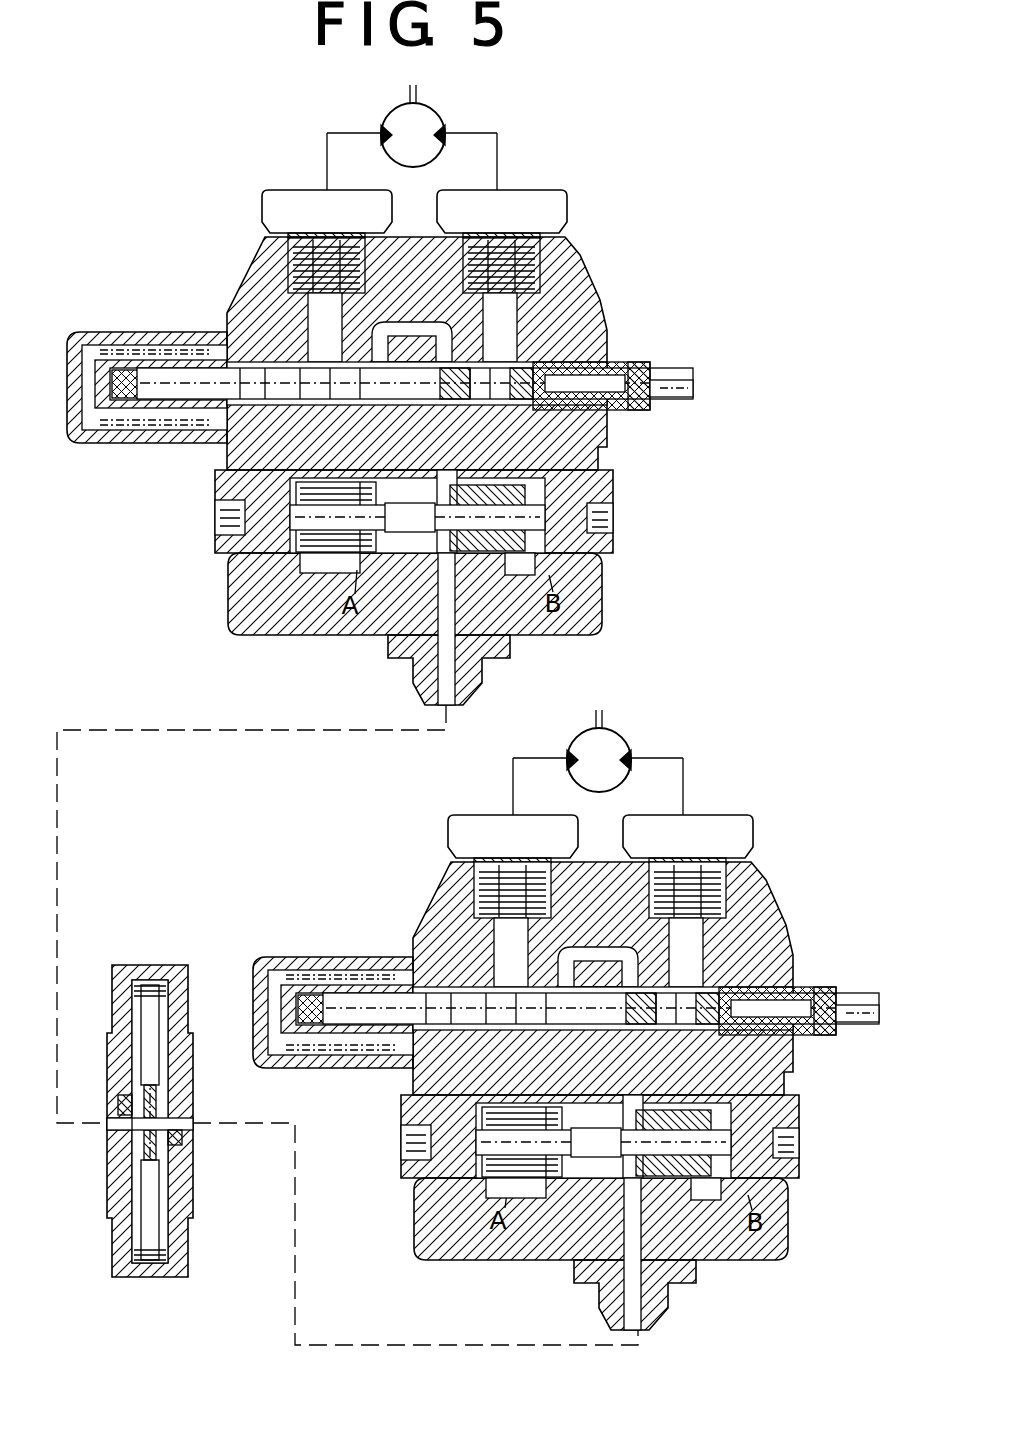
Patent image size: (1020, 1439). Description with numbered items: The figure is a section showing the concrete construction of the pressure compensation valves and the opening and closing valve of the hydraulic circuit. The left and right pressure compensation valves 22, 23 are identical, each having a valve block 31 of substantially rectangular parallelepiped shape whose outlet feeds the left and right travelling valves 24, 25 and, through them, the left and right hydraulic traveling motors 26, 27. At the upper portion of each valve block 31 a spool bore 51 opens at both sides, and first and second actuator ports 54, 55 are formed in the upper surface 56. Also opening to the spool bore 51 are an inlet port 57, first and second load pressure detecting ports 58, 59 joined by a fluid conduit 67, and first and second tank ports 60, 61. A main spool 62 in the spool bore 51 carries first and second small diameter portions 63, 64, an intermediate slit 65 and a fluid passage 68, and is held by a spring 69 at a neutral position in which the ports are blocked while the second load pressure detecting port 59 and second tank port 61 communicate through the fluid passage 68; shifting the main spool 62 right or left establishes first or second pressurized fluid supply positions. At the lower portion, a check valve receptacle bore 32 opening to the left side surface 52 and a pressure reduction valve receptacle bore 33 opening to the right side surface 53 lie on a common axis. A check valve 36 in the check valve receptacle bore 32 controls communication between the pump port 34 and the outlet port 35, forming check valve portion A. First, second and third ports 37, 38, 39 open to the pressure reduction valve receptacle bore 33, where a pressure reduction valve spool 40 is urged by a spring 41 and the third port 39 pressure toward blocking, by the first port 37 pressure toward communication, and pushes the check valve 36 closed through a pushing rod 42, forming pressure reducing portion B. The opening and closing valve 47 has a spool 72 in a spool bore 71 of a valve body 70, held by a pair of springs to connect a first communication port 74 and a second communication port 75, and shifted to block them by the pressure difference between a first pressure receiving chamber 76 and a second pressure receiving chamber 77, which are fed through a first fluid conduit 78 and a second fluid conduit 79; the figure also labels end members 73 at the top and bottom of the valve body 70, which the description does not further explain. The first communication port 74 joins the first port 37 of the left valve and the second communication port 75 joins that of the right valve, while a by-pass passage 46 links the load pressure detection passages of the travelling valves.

The left pressure compensation valve 22 is at (617, 520).
The right pressure compensation valve 23 is at (818, 1150).
The left travelling valve 24 is at (630, 362).
The right travelling valve 25 is at (626, 978).
The left hydraulic traveling motor 26 is at (458, 118).
The right hydraulic traveling motor 27 is at (598, 762).
The valve block 31 is at (597, 315).
The check valve receptacle bore 32 is at (374, 483).
The pressure reduction valve receptacle bore 33 is at (530, 484).
The pump port 34 is at (280, 572).
The outlet port 35 is at (385, 565).
The check valve 36 is at (312, 570).
The first port 37 is at (462, 478).
The second port 38 is at (500, 485).
The third port 39 is at (560, 482).
The pressure reduction valve spool 40 is at (492, 570).
The spring 41 is at (458, 560).
The pushing rod 42 is at (400, 505).
The by-pass passage 46 is at (305, 1250).
The opening and closing valve 47 is at (200, 1045).
The spool bore 51 is at (397, 322).
The left side surface 52 is at (228, 590).
The right side surface 53 is at (610, 455).
The first actuator port 54 is at (290, 262).
The second actuator port 55 is at (548, 262).
The upper surface 56 is at (413, 233).
The inlet port 57 is at (412, 324).
The first load pressure detecting port 58 is at (352, 422).
The second load pressure detecting port 59 is at (432, 325).
The first tank port 60 is at (276, 355).
The second tank port 61 is at (556, 356).
The main spool 62 is at (287, 425).
The first small diameter portion 63 is at (328, 356).
The second small diameter portion 64 is at (497, 355).
The intermediate slit 65 is at (410, 405).
The fluid conduit 67 is at (394, 300).
The fluid passage 68 is at (518, 410).
The spring 69 is at (203, 440).
The valve body 70 is at (195, 1073).
The spool bore 71 is at (170, 1110).
The spool 72 is at (165, 1145).
The thread 73 is at (175, 990).
The first communication port 74 is at (110, 1135).
The second communication port 75 is at (197, 1123).
The first pressure receiving chamber 76 is at (148, 1000).
The second pressure receiving chamber 77 is at (152, 1225).
The first fluid conduit 78 is at (120, 1100).
The second fluid conduit 79 is at (185, 1135).